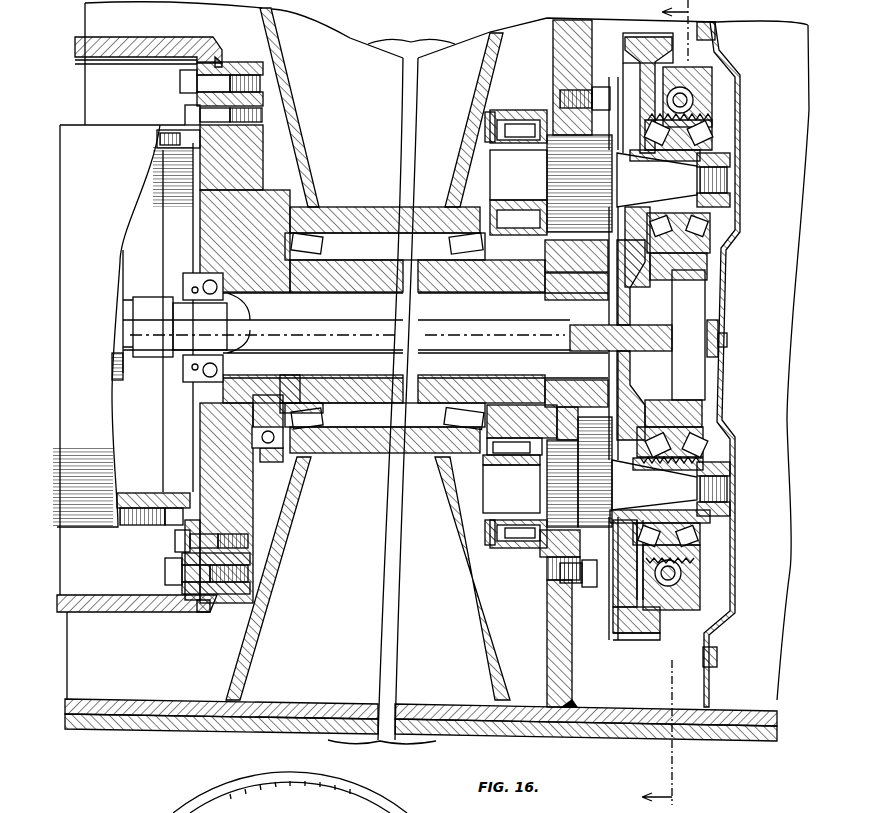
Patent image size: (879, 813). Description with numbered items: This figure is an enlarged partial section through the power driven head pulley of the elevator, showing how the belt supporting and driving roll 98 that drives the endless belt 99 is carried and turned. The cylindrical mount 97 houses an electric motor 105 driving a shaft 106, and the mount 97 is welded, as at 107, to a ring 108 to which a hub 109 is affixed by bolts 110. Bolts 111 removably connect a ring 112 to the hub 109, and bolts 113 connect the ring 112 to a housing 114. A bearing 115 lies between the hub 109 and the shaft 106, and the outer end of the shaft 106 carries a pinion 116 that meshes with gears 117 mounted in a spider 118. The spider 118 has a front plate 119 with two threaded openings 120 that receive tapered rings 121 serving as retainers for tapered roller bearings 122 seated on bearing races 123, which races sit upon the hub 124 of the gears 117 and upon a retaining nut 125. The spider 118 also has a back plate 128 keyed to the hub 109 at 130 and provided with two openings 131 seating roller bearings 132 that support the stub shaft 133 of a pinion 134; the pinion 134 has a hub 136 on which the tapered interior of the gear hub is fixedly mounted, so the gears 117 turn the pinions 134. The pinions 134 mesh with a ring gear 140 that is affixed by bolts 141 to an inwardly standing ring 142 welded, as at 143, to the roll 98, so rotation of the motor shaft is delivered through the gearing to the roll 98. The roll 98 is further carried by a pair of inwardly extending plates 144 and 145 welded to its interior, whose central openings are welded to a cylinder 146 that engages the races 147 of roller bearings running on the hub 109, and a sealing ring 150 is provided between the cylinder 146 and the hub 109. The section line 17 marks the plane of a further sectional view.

The section line 17- 17 is at (686, 402).
The mount 97 is at (128, 48).
The belt supporting and driving roll 98 is at (124, 700).
The endless belt 99 is at (202, 734).
The electric motor 105 is at (120, 375).
The shaft 106 is at (346, 335).
The weld 107 is at (222, 55).
The ring 108 is at (183, 612).
The hub 109 is at (243, 500).
The bolts 110 is at (216, 76).
The bolts 111 is at (185, 115).
The ring 112 is at (172, 492).
The bolts 113 is at (157, 142).
The housing 114 is at (123, 326).
The bearing 115 is at (238, 302).
The pinion 116 is at (665, 343).
The gears 117 is at (628, 320).
The spider 118 is at (690, 415).
The front plate 119 is at (690, 596).
The openings 120 is at (707, 262).
The tapered rings 121 is at (713, 128).
The tapered roller bearings 122 is at (705, 224).
The bearing races 123 is at (712, 146).
The hub 124 is at (690, 137).
The retaining nut 125 is at (730, 160).
The back plate 128 is at (492, 112).
The key 130 is at (528, 405).
The openings 131 is at (518, 120).
The bearings 132 is at (532, 124).
The stub shaft 133 is at (515, 331).
The pinion 134 is at (600, 150).
The hub 136 is at (742, 491).
The ring gear 140 is at (548, 555).
The bolts 141 is at (590, 587).
The inwardly standing ring 142 is at (572, 660).
The weld 143 is at (575, 705).
The inwardly extending plate 144 is at (258, 607).
The inwardly extending plate 145 is at (470, 620).
The cylinder 146 is at (360, 455).
The races 147 is at (462, 230).
The sealing ring 150 is at (290, 465).